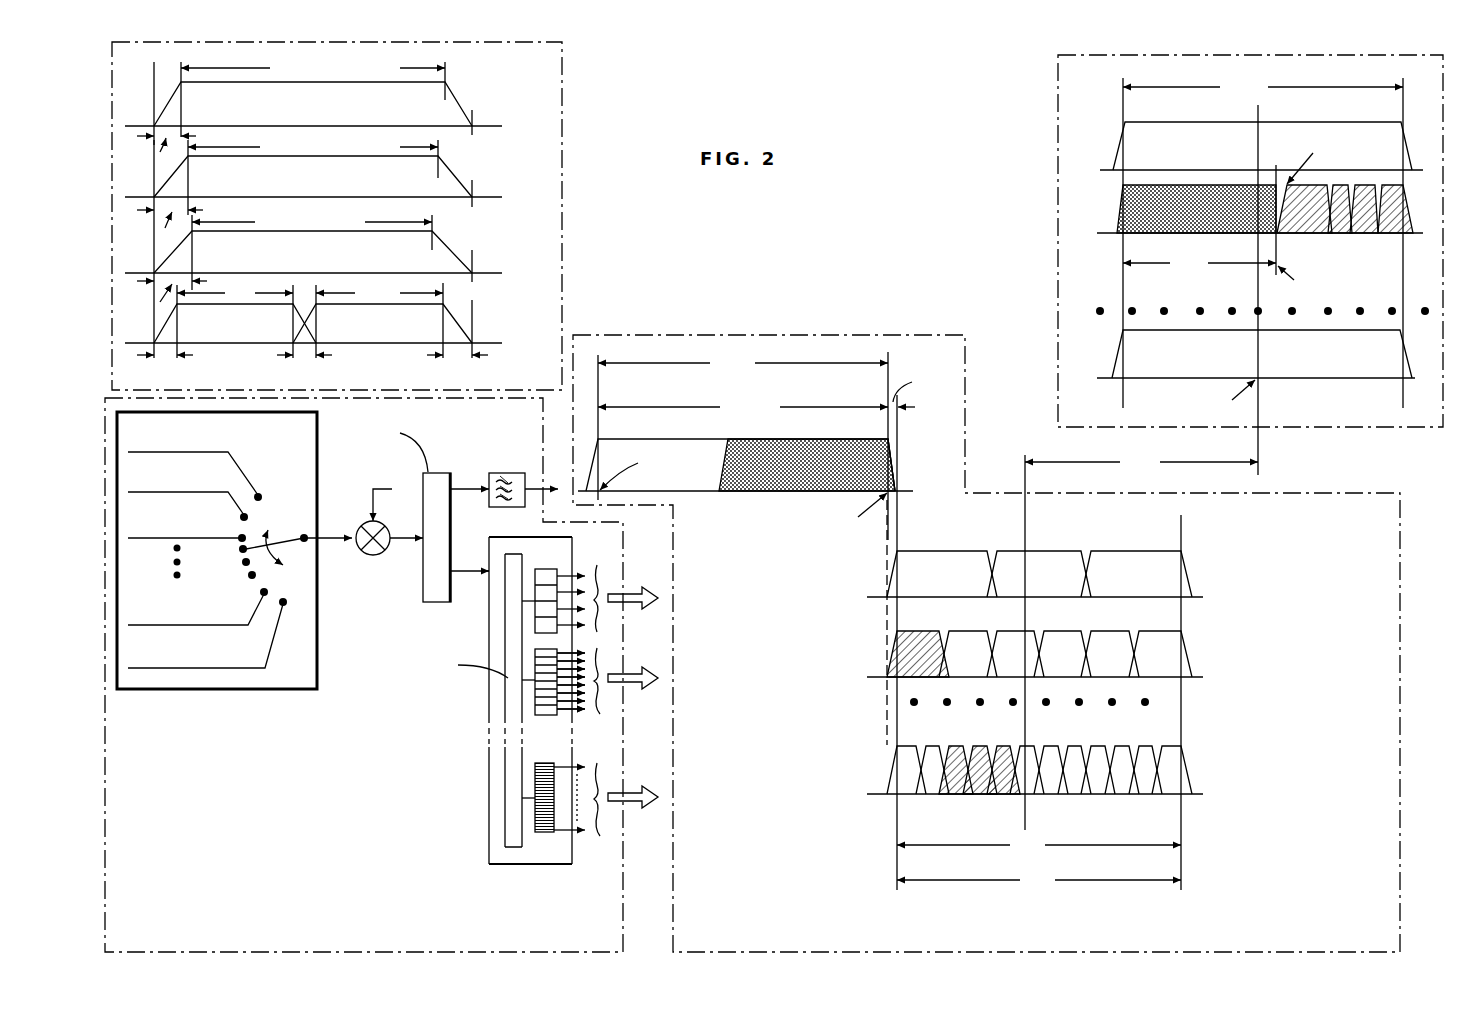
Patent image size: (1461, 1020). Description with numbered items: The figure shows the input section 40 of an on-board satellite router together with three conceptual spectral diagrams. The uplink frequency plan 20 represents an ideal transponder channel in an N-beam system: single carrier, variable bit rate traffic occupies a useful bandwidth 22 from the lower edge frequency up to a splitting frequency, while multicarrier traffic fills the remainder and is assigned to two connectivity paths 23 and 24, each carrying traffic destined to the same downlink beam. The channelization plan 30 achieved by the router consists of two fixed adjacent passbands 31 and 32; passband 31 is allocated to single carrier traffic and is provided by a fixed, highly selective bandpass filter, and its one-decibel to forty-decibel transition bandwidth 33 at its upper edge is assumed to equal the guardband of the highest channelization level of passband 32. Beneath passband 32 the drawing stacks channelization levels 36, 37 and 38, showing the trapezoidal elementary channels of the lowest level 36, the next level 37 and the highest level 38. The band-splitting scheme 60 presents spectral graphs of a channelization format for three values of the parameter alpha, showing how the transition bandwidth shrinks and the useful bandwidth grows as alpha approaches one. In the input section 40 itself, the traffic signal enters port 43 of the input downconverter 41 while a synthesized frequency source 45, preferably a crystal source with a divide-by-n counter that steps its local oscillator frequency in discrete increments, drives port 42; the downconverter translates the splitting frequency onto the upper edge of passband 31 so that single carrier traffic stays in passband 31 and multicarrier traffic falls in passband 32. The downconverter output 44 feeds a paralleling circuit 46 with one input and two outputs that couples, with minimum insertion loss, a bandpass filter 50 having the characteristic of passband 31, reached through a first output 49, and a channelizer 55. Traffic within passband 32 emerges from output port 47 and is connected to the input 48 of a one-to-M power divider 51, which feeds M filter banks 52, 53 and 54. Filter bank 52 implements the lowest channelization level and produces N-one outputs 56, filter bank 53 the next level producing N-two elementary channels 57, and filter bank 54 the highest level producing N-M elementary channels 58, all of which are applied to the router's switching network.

The uplink frequency plan 20 is at (1058, 168).
The useful bandwidth B_x 22 is at (1137, 236).
The connectivity path 23 is at (1346, 238).
The connectivity path 24 is at (1412, 238).
The channelization plan 30 is at (965, 372).
The passband 31 is at (743, 363).
The passband 32 is at (1039, 880).
The transition bandwidth 33 is at (891, 435).
The channel set N1 36 is at (860, 584).
The channel set N2 37 is at (860, 664).
The channel set NM 38 is at (860, 774).
The router input section 40 is at (624, 888).
The input downconverter 41 is at (373, 555).
The port 42 is at (333, 542).
The port 43 is at (388, 493).
The mixer output 44 is at (400, 541).
The synthesized frequency source 45 is at (247, 683).
The paralleling circuit 46 is at (436, 600).
The output port 47 is at (457, 568).
The input 48 is at (486, 577).
The manifold output to filter 49 is at (465, 488).
The bandpass filter 50 is at (512, 473).
The 1:M power divider 51 is at (505, 697).
The filter bank 52 is at (600, 563).
The filter bank 53 is at (567, 694).
The filter bank 54 is at (565, 811).
The channelizer 55 is at (553, 860).
The outputs 56 is at (640, 594).
The elementary channels 57 is at (640, 674).
The elementary channels 58 is at (640, 793).
The band-splitting scheme 60 is at (562, 120).